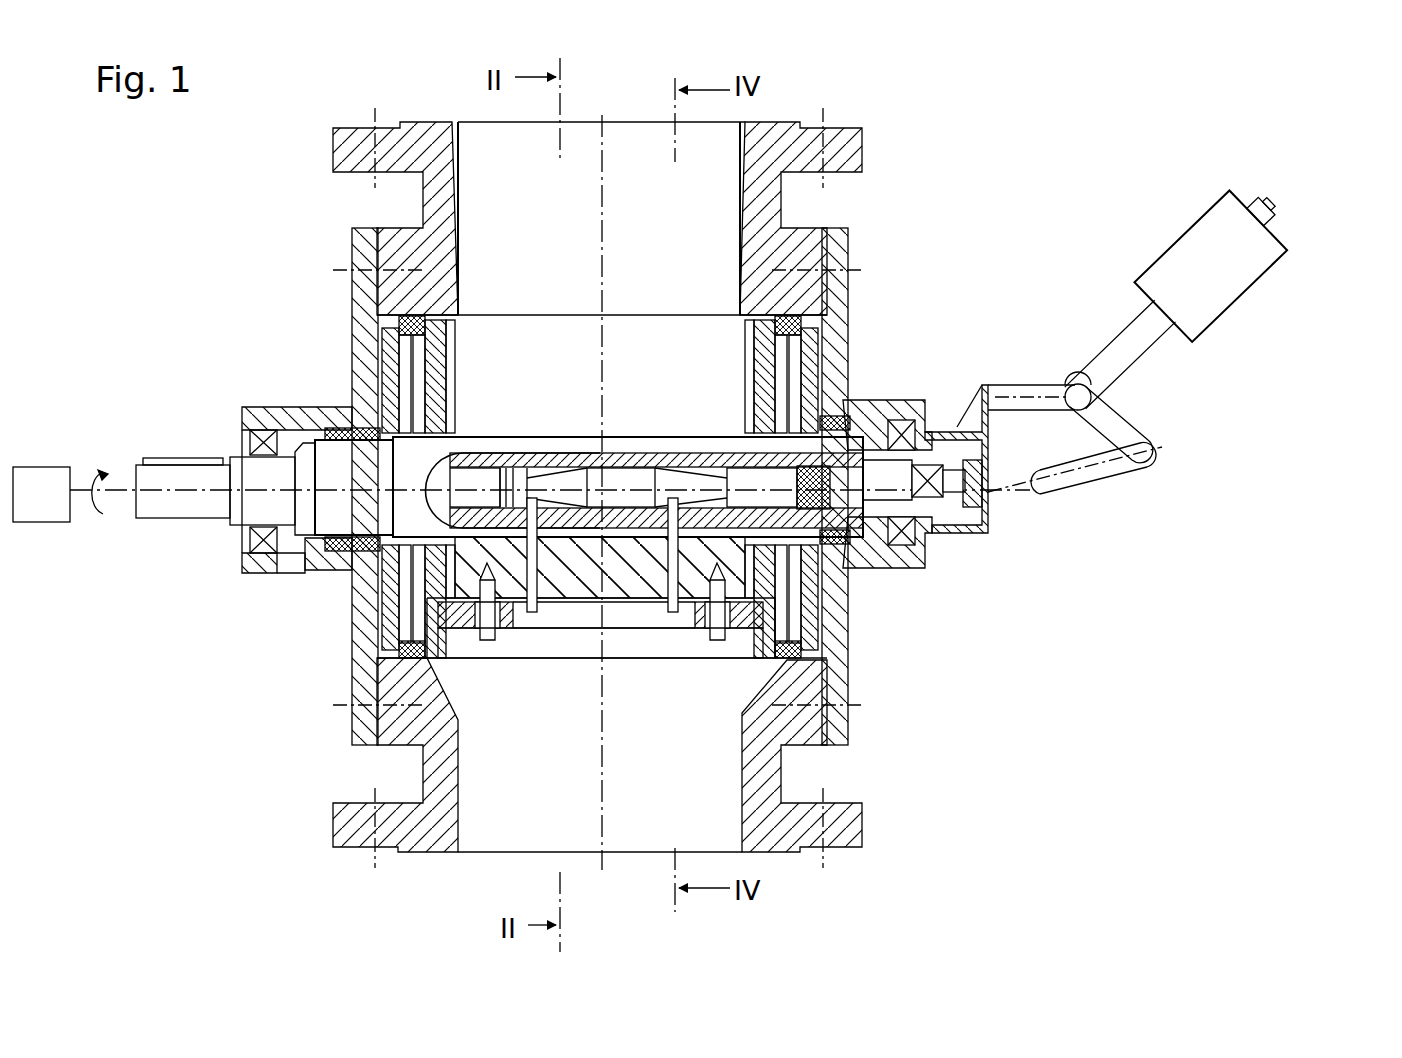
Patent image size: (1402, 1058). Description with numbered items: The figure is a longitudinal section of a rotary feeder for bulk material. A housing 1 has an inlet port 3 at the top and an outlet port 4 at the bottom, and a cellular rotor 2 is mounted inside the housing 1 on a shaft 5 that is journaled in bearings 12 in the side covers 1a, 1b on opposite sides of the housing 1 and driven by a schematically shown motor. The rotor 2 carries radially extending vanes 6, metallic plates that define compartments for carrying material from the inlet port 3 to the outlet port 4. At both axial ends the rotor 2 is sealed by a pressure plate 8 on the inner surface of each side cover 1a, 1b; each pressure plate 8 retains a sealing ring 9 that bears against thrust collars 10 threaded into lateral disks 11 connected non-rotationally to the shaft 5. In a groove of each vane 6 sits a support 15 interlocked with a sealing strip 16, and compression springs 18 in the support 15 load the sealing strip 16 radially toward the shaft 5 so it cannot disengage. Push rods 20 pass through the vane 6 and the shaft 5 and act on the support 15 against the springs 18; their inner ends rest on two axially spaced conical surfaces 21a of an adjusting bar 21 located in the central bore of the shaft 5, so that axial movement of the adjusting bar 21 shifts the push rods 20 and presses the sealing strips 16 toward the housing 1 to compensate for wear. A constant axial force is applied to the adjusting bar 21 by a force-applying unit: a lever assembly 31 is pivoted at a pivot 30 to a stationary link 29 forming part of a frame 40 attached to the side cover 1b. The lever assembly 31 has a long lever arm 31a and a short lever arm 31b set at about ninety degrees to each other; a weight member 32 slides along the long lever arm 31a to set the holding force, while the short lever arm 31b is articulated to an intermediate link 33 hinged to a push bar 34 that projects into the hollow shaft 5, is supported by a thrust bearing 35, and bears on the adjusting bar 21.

The housing 1 is at (770, 195).
The side cover 1a is at (352, 240).
The side cover 1b is at (840, 285).
The cellular rotor 2 is at (663, 318).
The inlet port 3 is at (645, 138).
The outlet port 4 is at (520, 830).
The shaft 5 is at (333, 520).
The vanes 6 is at (592, 583).
The pressure plate 8 is at (385, 376).
The sealing ring 9 is at (402, 333).
The thrust collars 10 is at (448, 322).
The lateral disks 11 is at (447, 385).
The bearings 12 is at (333, 560).
The support 15 is at (555, 620).
The sealing strip 16 is at (615, 646).
The compression spring 18 is at (497, 612).
The push rods 20 is at (670, 605).
The adjusting bar 21 is at (613, 470).
The conical surfaces 21a is at (545, 477).
The stationary link 29 is at (1025, 388).
The pivot 30 is at (1075, 387).
The lever assembly 31 is at (1100, 338).
The long lever arm 31a is at (1265, 205).
The short lever arm 31b is at (1120, 420).
The weight member 32 is at (1240, 275).
The intermediate link 33 is at (1105, 478).
The push bar 34 is at (940, 505).
The thrust bearing 35 is at (890, 568).
The frame 40 is at (962, 400).